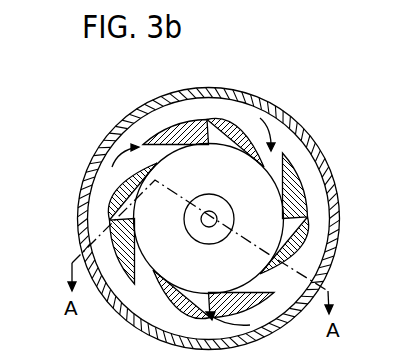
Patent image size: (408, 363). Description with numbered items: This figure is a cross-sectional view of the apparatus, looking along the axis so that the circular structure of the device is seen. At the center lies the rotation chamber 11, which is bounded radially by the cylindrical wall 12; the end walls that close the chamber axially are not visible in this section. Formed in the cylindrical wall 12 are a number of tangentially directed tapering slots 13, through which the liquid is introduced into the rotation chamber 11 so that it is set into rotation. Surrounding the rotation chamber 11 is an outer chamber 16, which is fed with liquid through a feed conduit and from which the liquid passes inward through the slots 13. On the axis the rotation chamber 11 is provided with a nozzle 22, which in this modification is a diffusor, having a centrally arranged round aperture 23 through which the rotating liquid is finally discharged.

The rotation chamber 11 is at (283, 212).
The cylindrical wall 12 is at (242, 122).
The tangentially directed tapering slots 13 is at (207, 121).
The chamber 16 is at (309, 134).
The nozzle 22 is at (214, 200).
The round aperture 23 is at (212, 228).